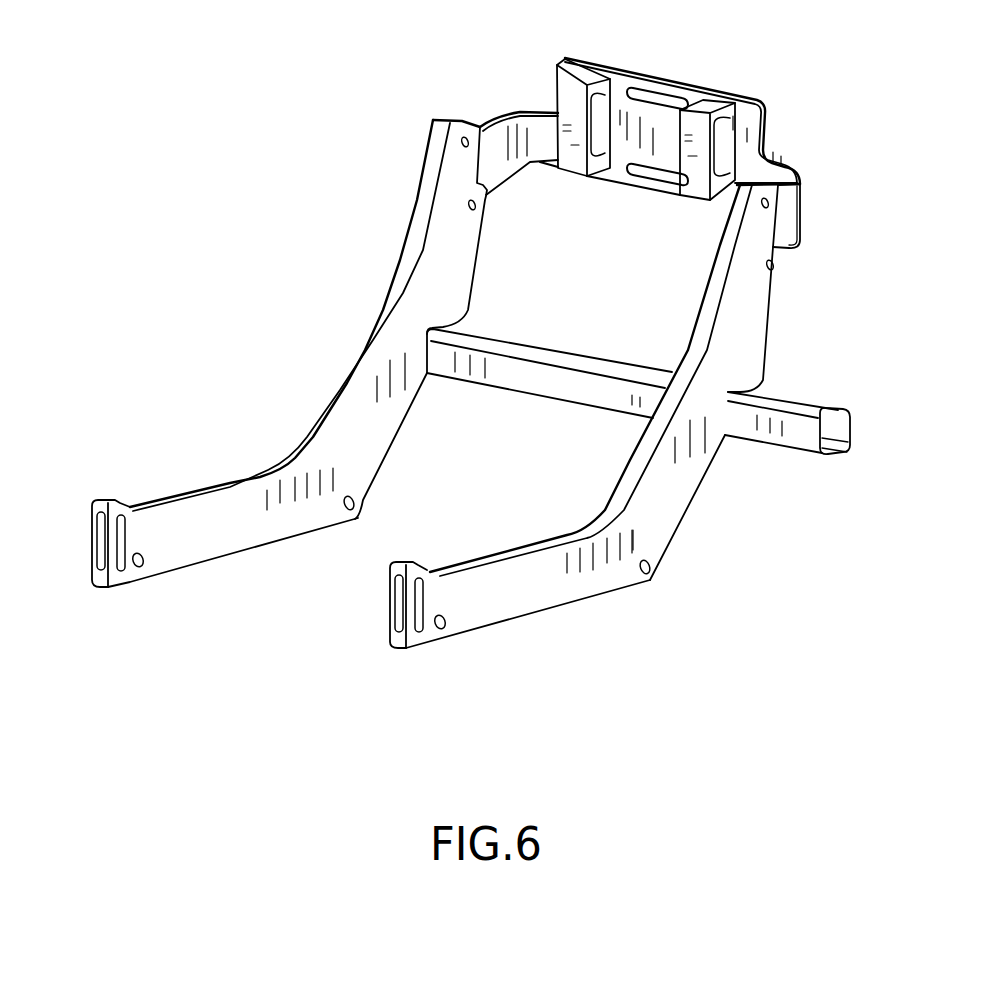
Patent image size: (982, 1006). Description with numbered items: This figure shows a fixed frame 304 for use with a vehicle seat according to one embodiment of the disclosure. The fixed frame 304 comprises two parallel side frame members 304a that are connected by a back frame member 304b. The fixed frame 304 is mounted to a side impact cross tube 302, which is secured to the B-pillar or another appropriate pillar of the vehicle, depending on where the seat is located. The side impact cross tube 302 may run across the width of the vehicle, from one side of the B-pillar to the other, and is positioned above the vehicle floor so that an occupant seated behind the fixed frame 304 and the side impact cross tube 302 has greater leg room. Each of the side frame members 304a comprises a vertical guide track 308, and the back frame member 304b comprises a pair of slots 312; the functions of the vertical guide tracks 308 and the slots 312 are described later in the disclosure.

The side impact cross tube 302 is at (842, 420).
The fixed frame 304 is at (226, 157).
The side frame members 304a is at (437, 248).
The back frame member 304b is at (756, 118).
The vertical guide track 308 is at (102, 543).
The slots 312 is at (574, 88).